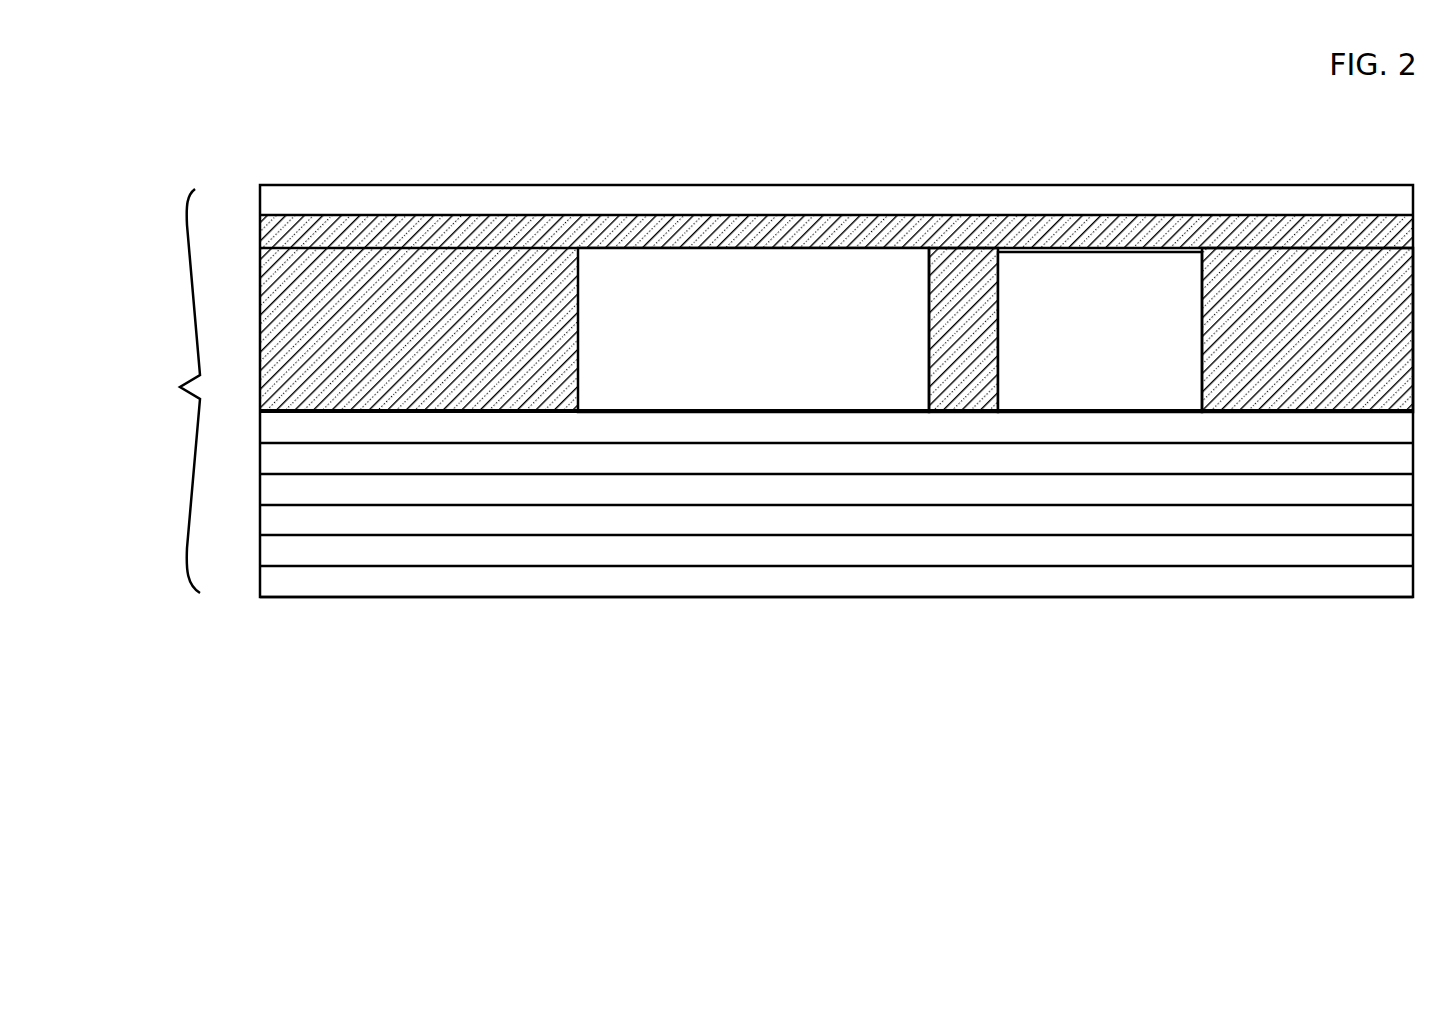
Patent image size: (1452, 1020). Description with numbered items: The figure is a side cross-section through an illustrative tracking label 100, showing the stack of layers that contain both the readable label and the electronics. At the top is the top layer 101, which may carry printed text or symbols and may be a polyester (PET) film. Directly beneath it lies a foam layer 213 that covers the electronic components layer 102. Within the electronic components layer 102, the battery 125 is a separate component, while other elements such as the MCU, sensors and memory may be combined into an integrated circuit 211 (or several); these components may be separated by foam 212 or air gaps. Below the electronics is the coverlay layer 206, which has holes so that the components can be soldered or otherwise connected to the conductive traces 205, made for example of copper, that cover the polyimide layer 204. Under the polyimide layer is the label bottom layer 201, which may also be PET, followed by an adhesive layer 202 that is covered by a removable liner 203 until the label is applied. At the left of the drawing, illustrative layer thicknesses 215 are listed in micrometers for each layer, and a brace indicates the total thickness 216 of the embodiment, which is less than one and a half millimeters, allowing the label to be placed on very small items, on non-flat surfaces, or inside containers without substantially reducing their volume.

The tracking label 100 is at (828, 150).
The top layer 101 is at (1170, 200).
The electronic components 102 is at (1413, 330).
The battery 125 is at (687, 273).
The label bottom layer 201 is at (1090, 522).
The adhesive layer 202 is at (1168, 555).
The removable liner 203 is at (1235, 578).
The polyimide layer 204 is at (358, 495).
The conductive traces 205 is at (461, 460).
The coverlay layer 206 is at (577, 427).
The integrated circuit 211 is at (1047, 273).
The foam 212 is at (950, 278).
The foam layer 213 is at (467, 233).
The layer thicknesses 215 is at (214, 115).
The total thickness 216 is at (150, 402).